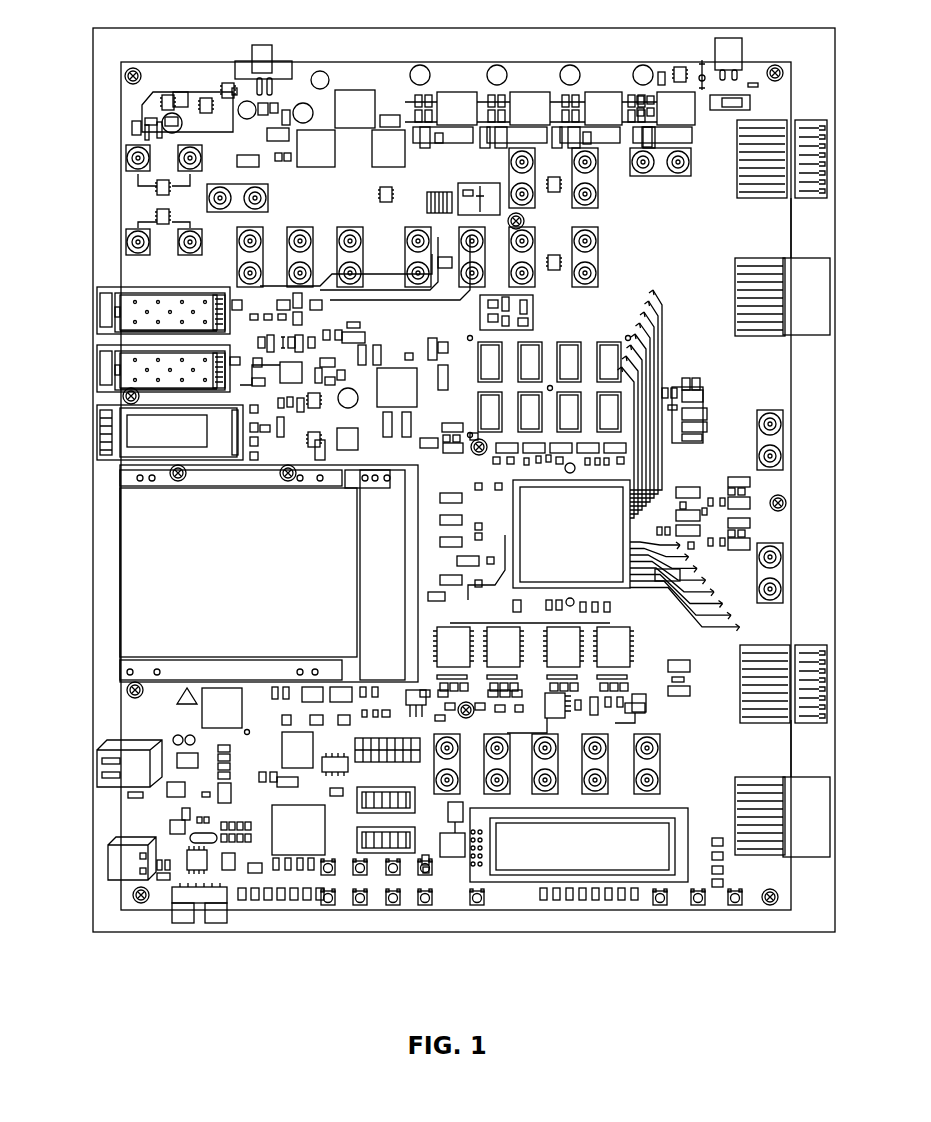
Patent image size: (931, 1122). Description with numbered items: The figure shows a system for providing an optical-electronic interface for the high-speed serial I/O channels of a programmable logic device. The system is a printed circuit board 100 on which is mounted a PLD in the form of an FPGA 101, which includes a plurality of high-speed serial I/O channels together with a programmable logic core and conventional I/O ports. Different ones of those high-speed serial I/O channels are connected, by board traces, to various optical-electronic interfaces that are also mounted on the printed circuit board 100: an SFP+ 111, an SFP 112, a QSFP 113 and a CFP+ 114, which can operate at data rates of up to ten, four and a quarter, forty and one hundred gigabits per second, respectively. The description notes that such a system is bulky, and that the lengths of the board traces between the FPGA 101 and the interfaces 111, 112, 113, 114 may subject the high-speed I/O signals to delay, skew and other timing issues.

The printed circuit board 100 is at (772, 932).
The FPGA 101 is at (614, 558).
The SFP+ 111 is at (100, 312).
The SFP 112 is at (100, 368).
The QSFP 113 is at (100, 428).
The CFP+ 114 is at (90, 480).